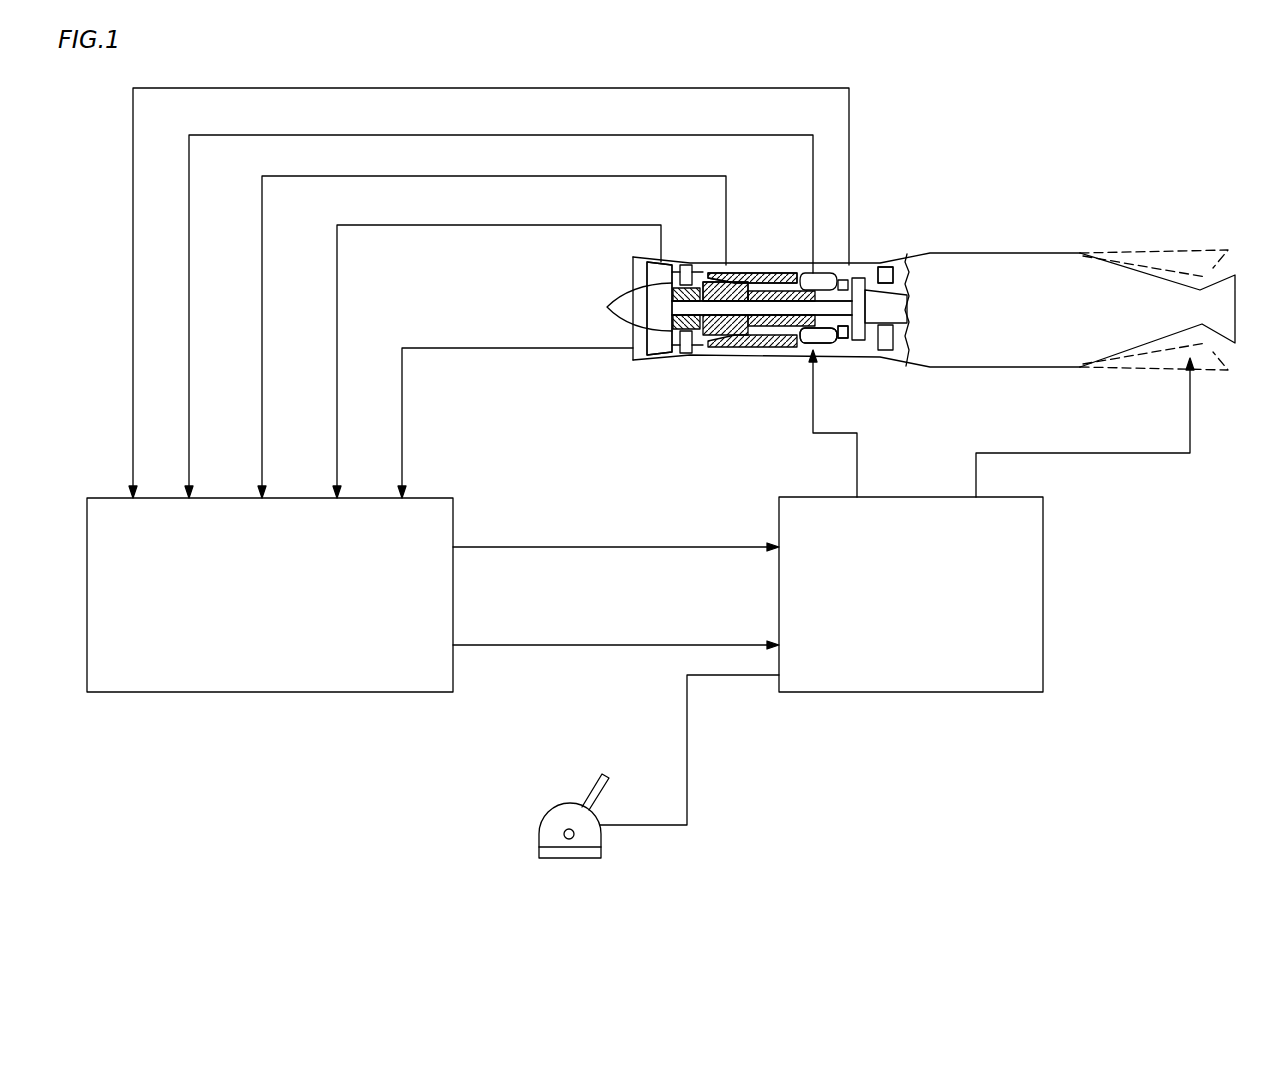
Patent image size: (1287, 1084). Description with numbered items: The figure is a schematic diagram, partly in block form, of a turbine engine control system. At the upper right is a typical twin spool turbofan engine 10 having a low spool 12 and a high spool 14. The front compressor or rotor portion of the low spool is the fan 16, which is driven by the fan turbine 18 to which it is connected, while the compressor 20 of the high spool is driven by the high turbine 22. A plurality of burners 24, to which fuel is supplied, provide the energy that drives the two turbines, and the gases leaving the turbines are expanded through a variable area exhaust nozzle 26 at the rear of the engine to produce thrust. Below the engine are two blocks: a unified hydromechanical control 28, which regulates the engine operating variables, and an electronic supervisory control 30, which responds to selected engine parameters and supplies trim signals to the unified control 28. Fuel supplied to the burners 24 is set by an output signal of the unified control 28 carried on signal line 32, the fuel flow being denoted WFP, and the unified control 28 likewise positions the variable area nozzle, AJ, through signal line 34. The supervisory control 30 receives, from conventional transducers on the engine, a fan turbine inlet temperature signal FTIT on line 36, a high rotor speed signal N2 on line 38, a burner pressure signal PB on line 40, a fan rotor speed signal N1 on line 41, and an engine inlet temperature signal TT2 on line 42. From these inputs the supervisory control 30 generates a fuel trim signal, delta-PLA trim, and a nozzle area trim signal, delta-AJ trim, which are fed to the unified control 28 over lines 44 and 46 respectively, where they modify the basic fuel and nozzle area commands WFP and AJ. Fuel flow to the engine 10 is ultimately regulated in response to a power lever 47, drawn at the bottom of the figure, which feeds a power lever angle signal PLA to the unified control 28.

The twin spool turbofan engine 10 is at (1050, 238).
The low spool 12 is at (717, 310).
The high spool 14 is at (768, 293).
The fan 16 is at (667, 352).
The fan turbine 18 is at (885, 267).
The compressor of the high spool 20 is at (706, 283).
The high turbine 22 is at (841, 338).
The burners 24 is at (808, 343).
The variable area exhaust nozzle 26 is at (1234, 272).
The unified hydromechanical control 28 is at (1043, 620).
The electronic supervisory control 30 is at (272, 692).
The fuel flow signal line 32 is at (857, 447).
The nozzle area signal line 34 is at (1085, 453).
The fan turbine inlet temperature signal line 36 is at (133, 201).
The high rotor speed signal line 38 is at (262, 316).
The burner pressure signal line 40 is at (189, 257).
The fan rotor speed signal line 41 is at (337, 392).
The engine inlet temperature signal line 42 is at (402, 437).
The PLA trim signal line 44 is at (718, 645).
The AJ trim signal line 46 is at (713, 547).
The power lever 47 is at (539, 828).